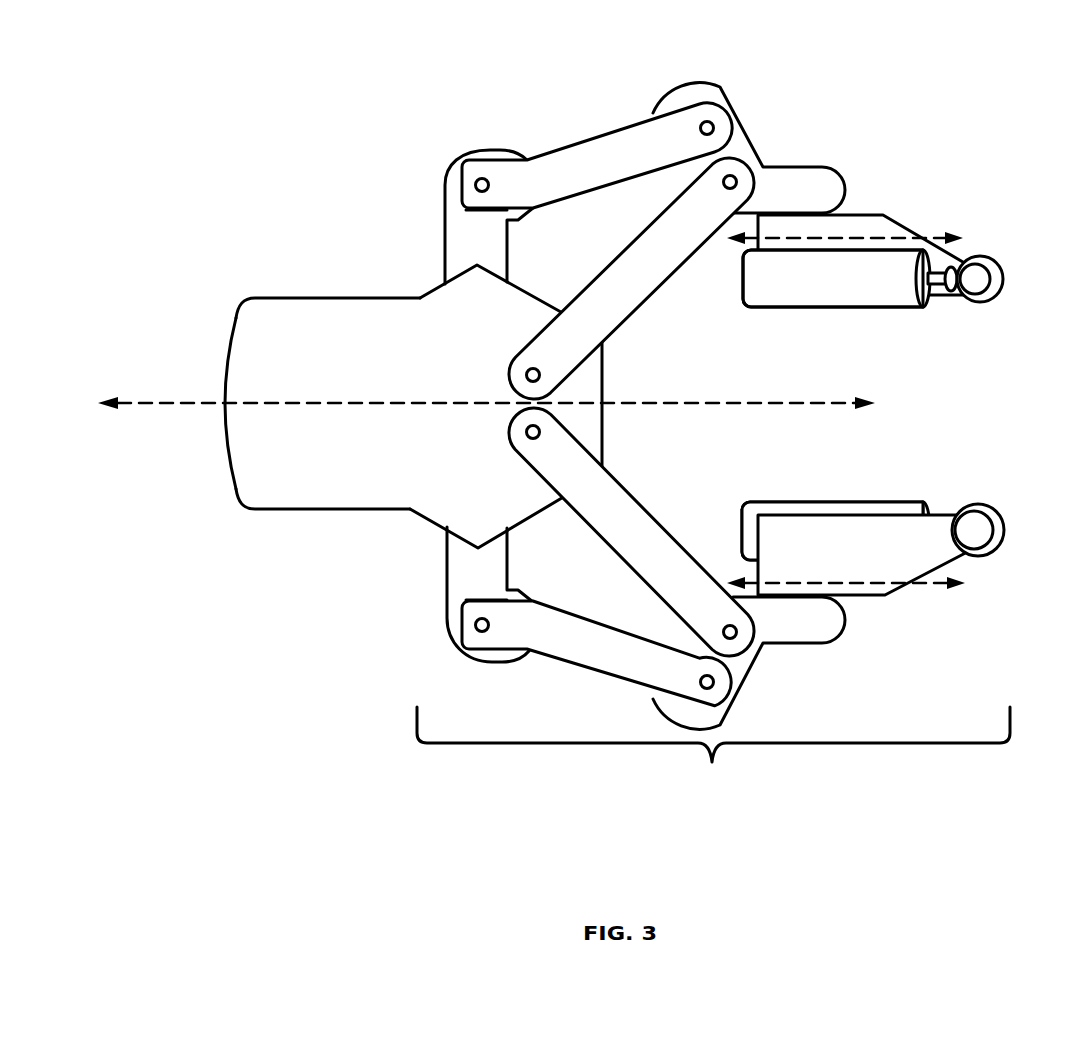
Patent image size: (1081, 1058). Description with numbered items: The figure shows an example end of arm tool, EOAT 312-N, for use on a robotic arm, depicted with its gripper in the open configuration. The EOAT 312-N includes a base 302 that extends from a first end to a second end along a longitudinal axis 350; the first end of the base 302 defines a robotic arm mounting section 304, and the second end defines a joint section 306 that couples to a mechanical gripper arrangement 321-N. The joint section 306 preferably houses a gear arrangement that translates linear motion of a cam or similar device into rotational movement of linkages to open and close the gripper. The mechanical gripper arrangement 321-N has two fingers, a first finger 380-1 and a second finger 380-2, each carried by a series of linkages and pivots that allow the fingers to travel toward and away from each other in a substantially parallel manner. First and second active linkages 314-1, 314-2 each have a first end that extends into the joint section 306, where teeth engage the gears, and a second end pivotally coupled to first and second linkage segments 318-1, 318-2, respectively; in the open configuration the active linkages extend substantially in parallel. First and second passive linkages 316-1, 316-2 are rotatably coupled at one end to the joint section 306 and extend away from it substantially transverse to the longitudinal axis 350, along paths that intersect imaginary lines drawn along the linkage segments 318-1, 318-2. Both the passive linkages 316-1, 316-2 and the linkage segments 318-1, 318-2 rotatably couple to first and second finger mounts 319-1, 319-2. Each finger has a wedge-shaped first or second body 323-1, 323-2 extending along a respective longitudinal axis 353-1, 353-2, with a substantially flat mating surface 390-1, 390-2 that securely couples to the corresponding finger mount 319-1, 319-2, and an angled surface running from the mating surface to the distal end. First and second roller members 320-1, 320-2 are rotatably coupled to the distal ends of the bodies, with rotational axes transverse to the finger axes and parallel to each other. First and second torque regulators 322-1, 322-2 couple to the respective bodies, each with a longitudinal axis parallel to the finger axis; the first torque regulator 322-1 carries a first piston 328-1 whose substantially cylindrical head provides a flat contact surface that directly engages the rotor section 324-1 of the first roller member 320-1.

The end of arm tool 312-N is at (250, 65).
The base 302 is at (272, 297).
The robotic arm mounting section 304 is at (203, 351).
The joint section 306 is at (453, 320).
The longitudinal axis 350 is at (680, 402).
The mechanical gripper arrangement 321-N is at (737, 842).
The first active linkage 314-1 is at (447, 177).
The second active linkage 314-2 is at (443, 595).
The first passive linkage 316-1 is at (652, 293).
The second passive linkage 316-2 is at (670, 522).
The first linkage segment 318-1 is at (593, 132).
The second linkage segment 318-2 is at (568, 665).
The first finger mount 319-1 is at (708, 92).
The second finger mount 319-2 is at (802, 638).
The first torque regulator 322-1 is at (826, 308).
The second torque regulator 322-2 is at (850, 502).
The first body 323-1 is at (787, 230).
The second body 323-2 is at (905, 527).
The longitudinal axis of first finger 353-1 is at (857, 240).
The longitudinal axis of second finger 353-2 is at (782, 583).
The first roller member 320-1 is at (978, 307).
The second roller member 320-2 is at (995, 502).
The rotor section 324-1 is at (995, 295).
The first piston 328-1 is at (952, 297).
The first mating surface 390-1 is at (863, 197).
The second mating surface 390-2 is at (868, 612).
The first finger 380-1 is at (968, 184).
The second finger 380-2 is at (950, 634).